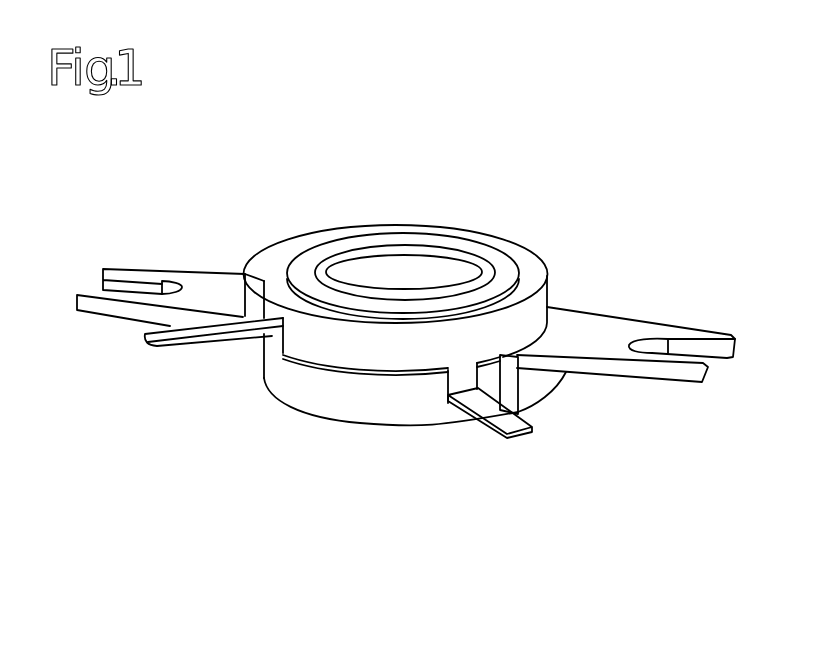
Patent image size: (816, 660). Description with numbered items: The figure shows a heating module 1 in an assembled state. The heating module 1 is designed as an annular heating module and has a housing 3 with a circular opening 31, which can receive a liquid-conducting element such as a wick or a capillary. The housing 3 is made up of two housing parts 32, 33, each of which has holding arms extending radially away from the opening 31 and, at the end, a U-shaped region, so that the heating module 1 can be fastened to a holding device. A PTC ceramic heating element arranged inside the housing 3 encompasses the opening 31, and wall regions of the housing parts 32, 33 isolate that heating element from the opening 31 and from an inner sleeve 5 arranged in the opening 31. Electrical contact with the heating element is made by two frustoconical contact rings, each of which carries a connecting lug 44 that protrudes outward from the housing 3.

The heating module 1 is at (289, 165).
The housing 3 is at (412, 500).
The inner sleeve 5 is at (501, 263).
The opening 31 is at (416, 285).
The housing part 32 is at (353, 353).
The housing part 33 is at (378, 403).
The connecting lug 44 is at (167, 344).